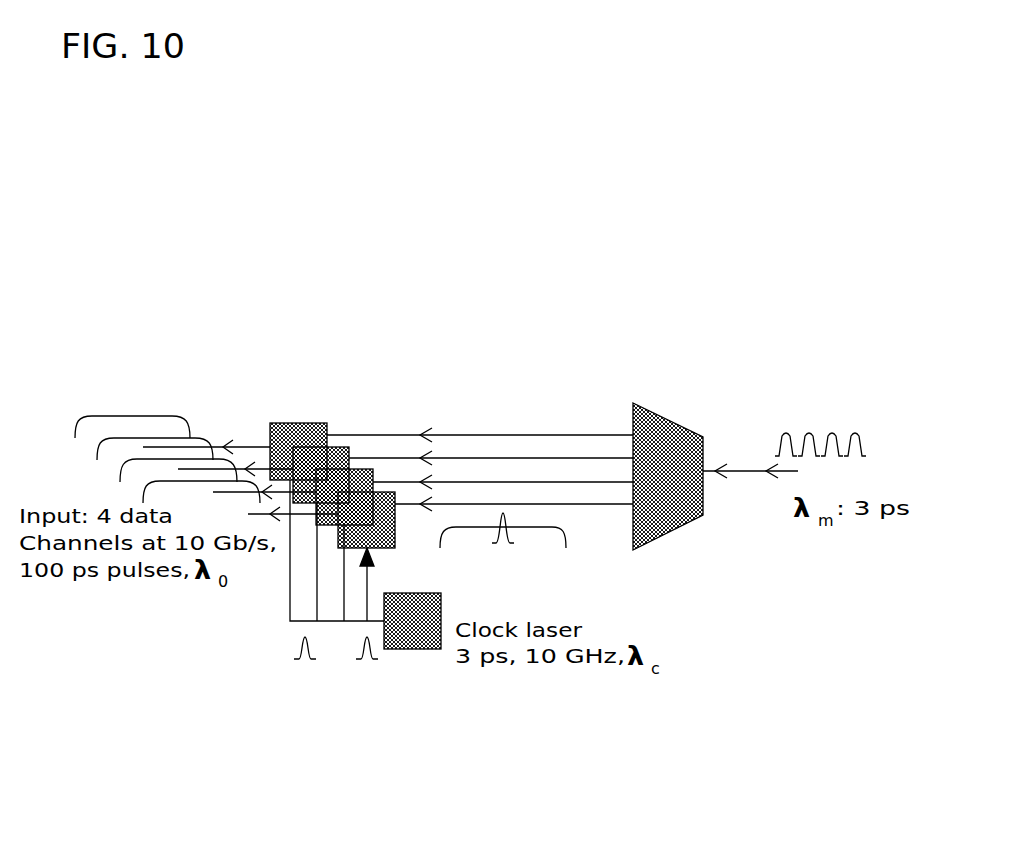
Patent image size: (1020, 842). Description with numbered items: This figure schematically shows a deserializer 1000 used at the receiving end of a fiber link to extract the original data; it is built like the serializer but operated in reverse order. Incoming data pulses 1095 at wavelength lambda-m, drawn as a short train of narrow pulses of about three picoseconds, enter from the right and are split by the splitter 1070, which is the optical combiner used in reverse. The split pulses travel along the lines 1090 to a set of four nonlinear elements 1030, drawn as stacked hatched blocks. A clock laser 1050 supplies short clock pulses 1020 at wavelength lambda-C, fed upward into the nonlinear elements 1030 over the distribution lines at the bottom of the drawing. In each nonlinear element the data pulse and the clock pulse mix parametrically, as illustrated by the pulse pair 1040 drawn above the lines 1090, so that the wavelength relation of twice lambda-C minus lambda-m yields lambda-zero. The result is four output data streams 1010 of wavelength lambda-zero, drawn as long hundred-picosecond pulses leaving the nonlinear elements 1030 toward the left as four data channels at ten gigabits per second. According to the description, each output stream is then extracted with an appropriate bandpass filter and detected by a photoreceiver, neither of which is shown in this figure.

The deserializer 1000 is at (753, 620).
The output data streams 1010 is at (150, 417).
The clock pulses 1020 is at (297, 658).
The nonlinear elements 1030 is at (313, 423).
The modulated output pulse 1040 is at (535, 542).
The clock laser 1050 is at (420, 650).
The splitter 1070 is at (688, 428).
The optical transmission lines 1090 is at (613, 505).
The data pulses 1095 is at (758, 482).